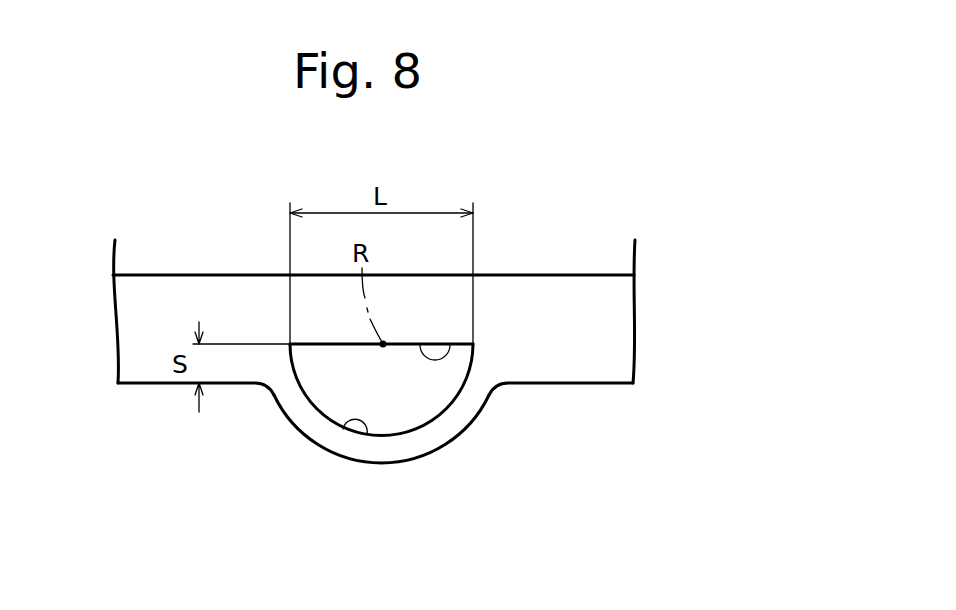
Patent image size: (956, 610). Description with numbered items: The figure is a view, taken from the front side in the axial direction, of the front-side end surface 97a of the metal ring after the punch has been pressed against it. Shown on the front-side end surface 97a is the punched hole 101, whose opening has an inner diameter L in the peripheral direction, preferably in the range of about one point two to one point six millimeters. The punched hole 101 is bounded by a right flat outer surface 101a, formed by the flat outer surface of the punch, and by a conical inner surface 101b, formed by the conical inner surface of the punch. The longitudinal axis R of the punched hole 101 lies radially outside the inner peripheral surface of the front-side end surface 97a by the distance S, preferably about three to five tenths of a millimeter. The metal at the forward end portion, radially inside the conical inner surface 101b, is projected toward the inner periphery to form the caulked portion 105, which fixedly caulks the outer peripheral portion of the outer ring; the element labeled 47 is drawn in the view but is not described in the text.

The plate member 47 is at (510, 246).
The front-side end surface 97a is at (587, 337).
The punched hole 101 is at (454, 386).
The right flat outer surface 101a is at (448, 345).
The conical inner surface 101b is at (418, 395).
The caulked portion 105 is at (397, 463).